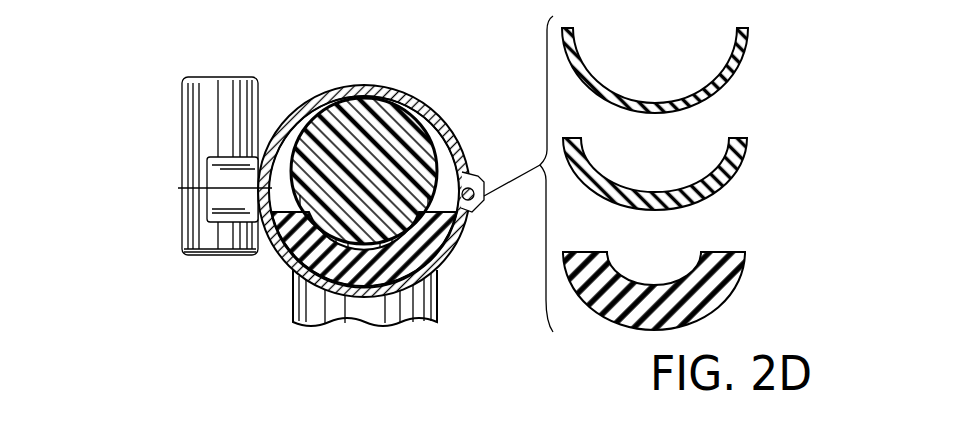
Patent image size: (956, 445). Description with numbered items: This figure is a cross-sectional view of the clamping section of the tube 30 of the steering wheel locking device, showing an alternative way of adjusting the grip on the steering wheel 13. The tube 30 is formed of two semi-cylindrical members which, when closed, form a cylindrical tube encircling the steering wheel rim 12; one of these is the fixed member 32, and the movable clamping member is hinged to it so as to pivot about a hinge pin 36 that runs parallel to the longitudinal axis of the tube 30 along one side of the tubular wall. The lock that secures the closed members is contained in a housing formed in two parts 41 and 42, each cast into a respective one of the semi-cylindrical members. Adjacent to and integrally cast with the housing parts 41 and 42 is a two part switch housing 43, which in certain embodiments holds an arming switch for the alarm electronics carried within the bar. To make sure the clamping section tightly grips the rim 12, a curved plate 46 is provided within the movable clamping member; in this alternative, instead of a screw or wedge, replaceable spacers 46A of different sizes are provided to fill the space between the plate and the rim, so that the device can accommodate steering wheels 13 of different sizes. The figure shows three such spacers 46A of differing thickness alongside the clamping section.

The steering wheel rim 12 is at (439, 118).
The steering wheel 13 is at (293, 309).
The tube 30 is at (457, 133).
The fixed member 32 is at (400, 96).
The hinge pin 36 is at (474, 177).
The housing part 41 is at (186, 103).
The housing part 42 is at (183, 235).
The two part switch housing 43 is at (207, 176).
The curved plate 46 is at (453, 242).
The replaceable spacers 46A is at (748, 55).